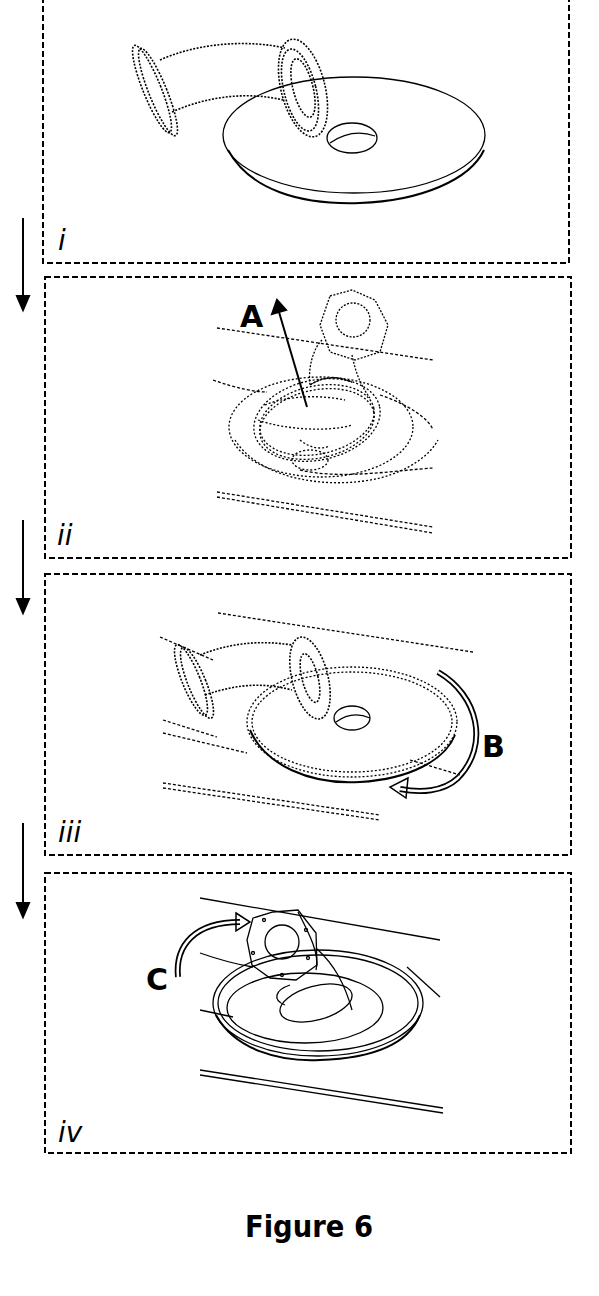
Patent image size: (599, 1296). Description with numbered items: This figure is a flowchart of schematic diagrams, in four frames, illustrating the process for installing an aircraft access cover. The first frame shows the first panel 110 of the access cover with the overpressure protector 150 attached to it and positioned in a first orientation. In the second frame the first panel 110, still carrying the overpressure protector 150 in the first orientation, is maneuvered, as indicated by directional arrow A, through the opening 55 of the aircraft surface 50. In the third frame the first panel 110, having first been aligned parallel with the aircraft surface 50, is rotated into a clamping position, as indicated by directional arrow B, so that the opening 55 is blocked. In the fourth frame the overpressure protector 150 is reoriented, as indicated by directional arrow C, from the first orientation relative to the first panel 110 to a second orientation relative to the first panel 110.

The aircraft surface 50 is at (420, 490).
The opening 55 is at (400, 435).
The first panel 110 is at (440, 158).
The overpressure protector 150 is at (237, 85).